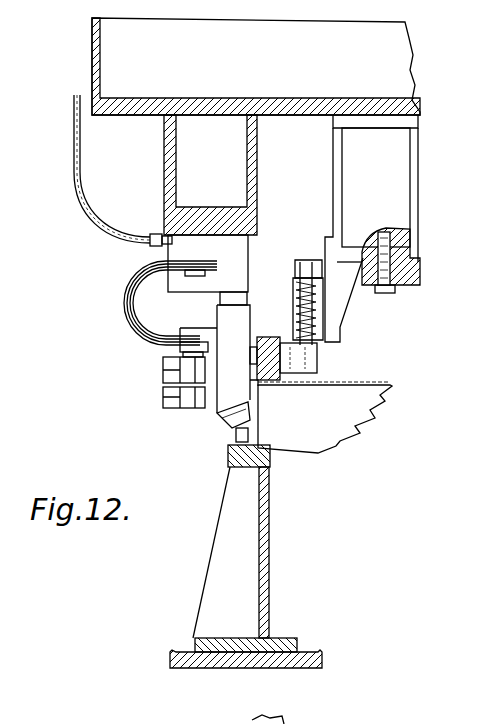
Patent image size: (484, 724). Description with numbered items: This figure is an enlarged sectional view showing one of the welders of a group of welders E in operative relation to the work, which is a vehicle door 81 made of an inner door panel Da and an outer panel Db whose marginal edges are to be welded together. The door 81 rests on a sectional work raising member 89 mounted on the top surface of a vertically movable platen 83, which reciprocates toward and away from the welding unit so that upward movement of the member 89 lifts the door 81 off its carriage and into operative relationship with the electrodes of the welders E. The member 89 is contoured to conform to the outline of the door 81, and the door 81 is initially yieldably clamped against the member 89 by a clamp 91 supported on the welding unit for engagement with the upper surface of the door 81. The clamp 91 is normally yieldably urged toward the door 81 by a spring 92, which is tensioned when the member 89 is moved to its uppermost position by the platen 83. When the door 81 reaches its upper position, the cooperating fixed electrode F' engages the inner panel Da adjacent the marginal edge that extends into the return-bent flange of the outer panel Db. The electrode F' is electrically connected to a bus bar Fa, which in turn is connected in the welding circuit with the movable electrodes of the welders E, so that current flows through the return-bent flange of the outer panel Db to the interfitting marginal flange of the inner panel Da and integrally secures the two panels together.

The spring 92 is at (292, 294).
The clamp 91 is at (262, 337).
The door 81 is at (350, 381).
The sectional work raising member 89 is at (269, 537).
The platen 83 is at (192, 668).
The bus bar Fa is at (407, 287).
The inner vehicle door panel Da is at (258, 399).
The outer panel Db is at (302, 455).
The cooperating electrode F' is at (230, 459).
The group of welders E is at (163, 365).